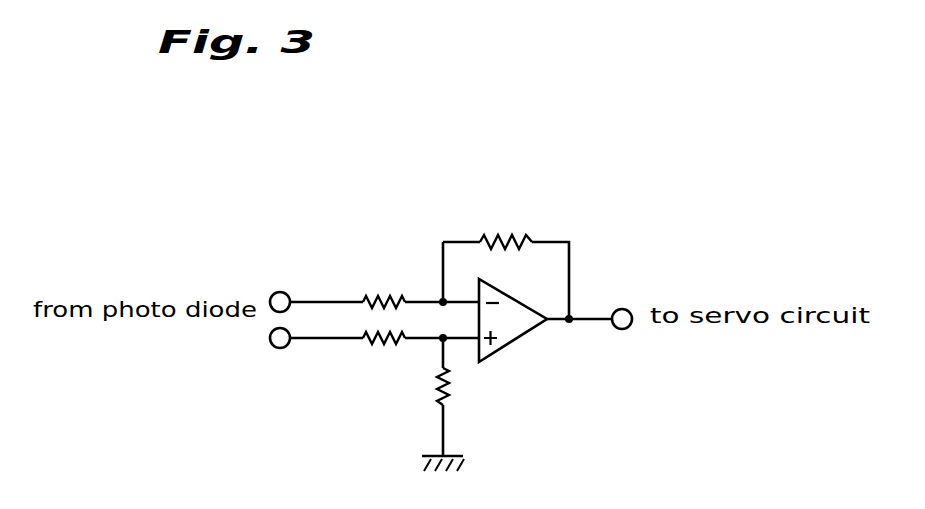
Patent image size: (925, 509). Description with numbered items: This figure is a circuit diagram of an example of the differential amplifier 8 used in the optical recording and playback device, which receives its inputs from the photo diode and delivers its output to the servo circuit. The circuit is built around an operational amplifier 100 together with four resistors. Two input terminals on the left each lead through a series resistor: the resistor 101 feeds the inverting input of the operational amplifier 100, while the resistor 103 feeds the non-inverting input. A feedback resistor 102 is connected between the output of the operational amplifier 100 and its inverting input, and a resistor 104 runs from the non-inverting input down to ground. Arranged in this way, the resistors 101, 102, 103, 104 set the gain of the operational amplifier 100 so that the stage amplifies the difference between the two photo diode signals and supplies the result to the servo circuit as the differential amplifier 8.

The differential amplifier 8 is at (522, 228).
The operational amplifier 100 is at (522, 338).
The resistor 101 is at (383, 292).
The resistor 102 is at (510, 237).
The resistor 103 is at (386, 343).
The resistor 104 is at (447, 387).